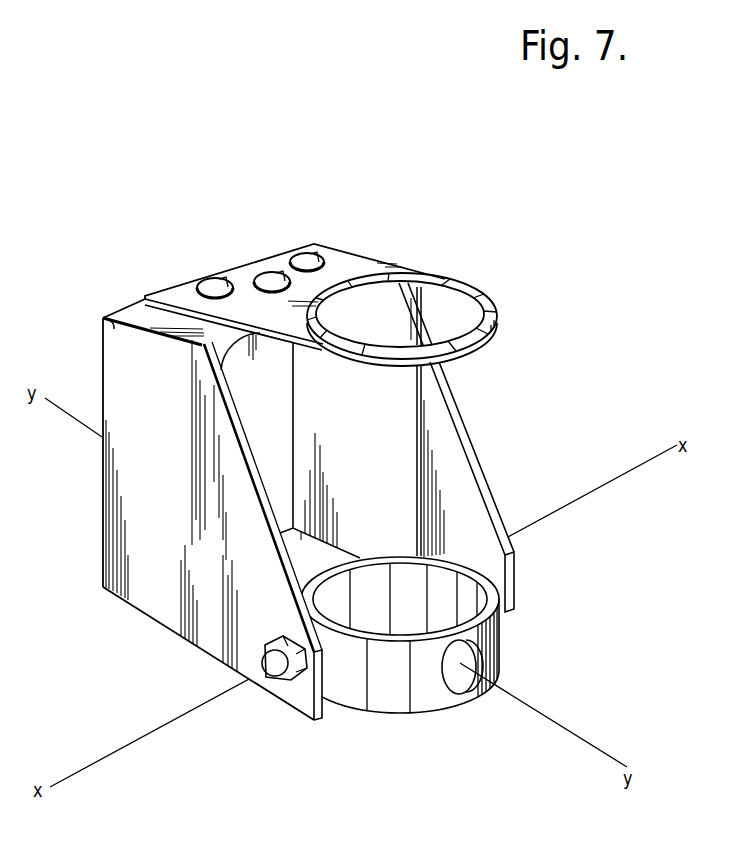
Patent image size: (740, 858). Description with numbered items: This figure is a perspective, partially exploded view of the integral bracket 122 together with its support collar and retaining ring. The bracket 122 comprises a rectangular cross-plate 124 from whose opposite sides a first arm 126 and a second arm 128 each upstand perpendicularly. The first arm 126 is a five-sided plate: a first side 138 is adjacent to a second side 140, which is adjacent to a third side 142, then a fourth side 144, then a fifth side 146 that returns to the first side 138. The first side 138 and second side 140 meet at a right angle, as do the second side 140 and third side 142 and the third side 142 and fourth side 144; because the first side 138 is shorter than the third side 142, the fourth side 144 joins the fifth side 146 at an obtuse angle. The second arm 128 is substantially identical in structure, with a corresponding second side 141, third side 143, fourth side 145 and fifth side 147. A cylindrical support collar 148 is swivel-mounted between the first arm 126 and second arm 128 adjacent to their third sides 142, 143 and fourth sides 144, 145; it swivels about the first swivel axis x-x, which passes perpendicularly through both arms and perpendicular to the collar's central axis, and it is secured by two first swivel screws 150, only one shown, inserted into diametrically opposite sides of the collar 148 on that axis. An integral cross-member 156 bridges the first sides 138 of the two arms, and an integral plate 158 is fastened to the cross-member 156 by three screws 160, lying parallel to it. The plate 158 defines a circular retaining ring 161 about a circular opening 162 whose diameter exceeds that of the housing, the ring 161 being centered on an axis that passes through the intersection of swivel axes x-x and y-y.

The integral bracket 122 is at (100, 447).
The rectangular cross-plate 124 is at (103, 351).
The first arm 126 is at (153, 602).
The second arm 128 is at (442, 405).
The first side 138 is at (104, 324).
The second side 140 is at (103, 518).
The inner wall edge 141 is at (296, 369).
The third side 142 is at (192, 641).
The third side of second arm 143 is at (500, 612).
The fourth side 144 is at (324, 715).
The fourth side of second arm 145 is at (513, 568).
The fifth side 146 is at (278, 547).
The fifth side of second arm 147 is at (469, 442).
The cylindrical support collar 148 is at (439, 700).
The first swivel screw 150 is at (284, 688).
The integral cross-member 156 is at (125, 315).
The integral plate 158 is at (345, 259).
The screws 160 is at (306, 254).
The circular retaining ring 161 is at (444, 281).
The circular opening 162 is at (436, 308).